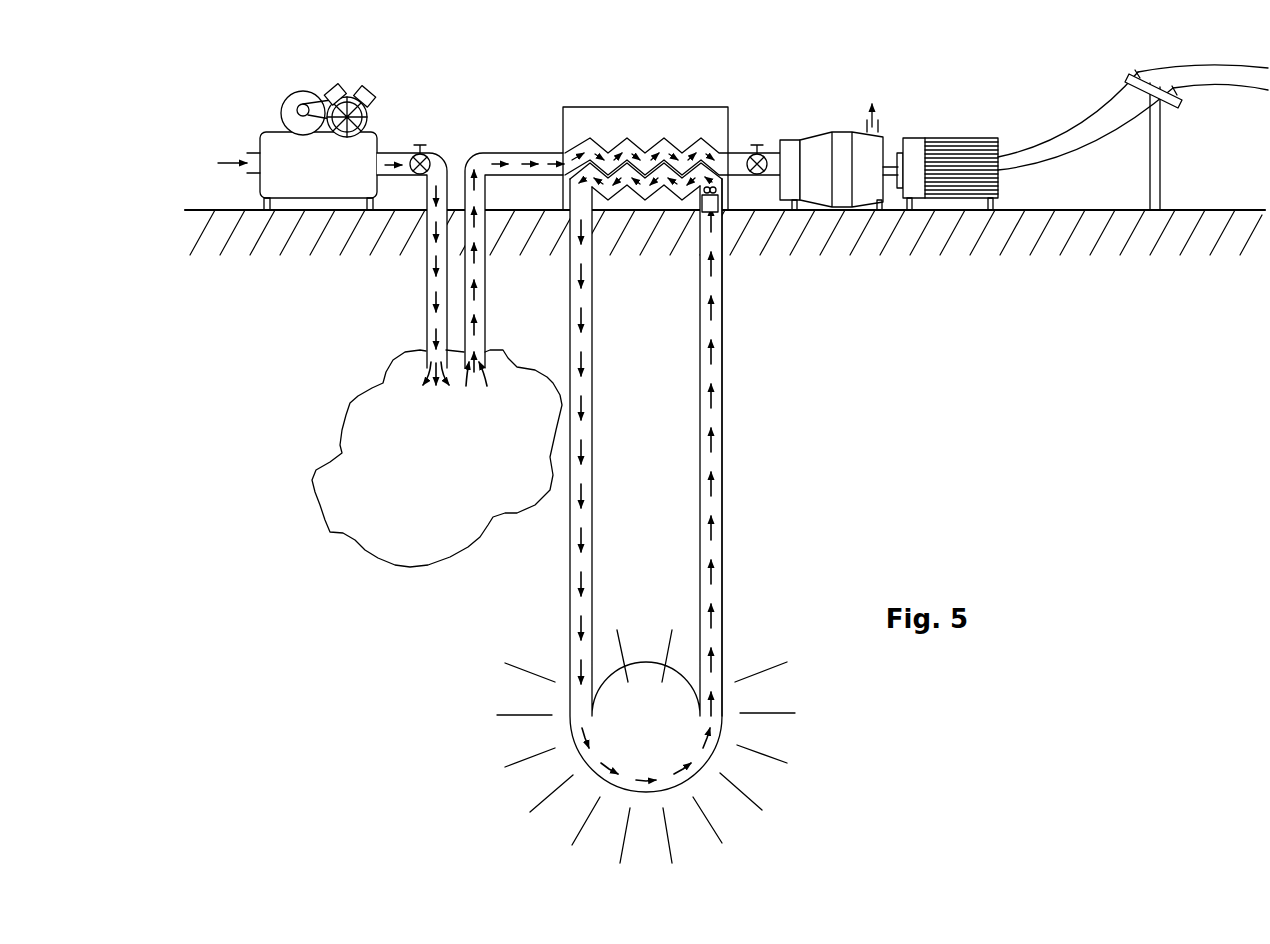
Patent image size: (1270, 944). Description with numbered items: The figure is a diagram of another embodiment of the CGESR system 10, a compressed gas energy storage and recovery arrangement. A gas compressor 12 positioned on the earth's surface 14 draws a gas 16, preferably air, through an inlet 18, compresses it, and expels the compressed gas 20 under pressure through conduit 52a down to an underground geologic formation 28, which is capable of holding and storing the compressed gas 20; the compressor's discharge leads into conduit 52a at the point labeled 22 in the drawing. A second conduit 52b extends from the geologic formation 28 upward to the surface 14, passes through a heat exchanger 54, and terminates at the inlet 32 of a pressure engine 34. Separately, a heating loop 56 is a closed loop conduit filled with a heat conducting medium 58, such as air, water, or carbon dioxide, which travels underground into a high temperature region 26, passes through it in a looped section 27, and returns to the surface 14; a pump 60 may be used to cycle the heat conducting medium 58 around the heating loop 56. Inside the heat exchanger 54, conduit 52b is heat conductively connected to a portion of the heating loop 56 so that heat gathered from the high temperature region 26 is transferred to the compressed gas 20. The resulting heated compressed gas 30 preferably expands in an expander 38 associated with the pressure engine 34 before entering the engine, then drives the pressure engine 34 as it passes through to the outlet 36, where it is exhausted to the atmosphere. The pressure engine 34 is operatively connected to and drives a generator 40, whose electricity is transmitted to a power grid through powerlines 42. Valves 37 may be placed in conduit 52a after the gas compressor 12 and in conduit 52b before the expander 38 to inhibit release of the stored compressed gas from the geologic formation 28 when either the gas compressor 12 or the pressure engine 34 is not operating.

The CGESR system 10 is at (927, 93).
The gas compressor 12 is at (306, 176).
The earth's surface 14 is at (1067, 212).
The gas 16 is at (230, 165).
The inlet 18 is at (255, 153).
The compressed gas 20 is at (393, 170).
The outlet pipe 22 is at (380, 150).
The high temperature region 26 is at (634, 734).
The looped section 27 is at (697, 772).
The underground geologic formation 28 is at (350, 403).
The heated compressed gas 30 is at (712, 140).
The inlet 32 is at (777, 180).
The pressure engine 34 is at (832, 134).
The outlet 36 is at (870, 122).
The valves 37 is at (421, 145).
The expander 38 is at (790, 150).
The generator 40 is at (940, 138).
The powerlines 42 is at (1138, 133).
The conduit 52a is at (426, 302).
The conduit 52b is at (493, 150).
The heat exchanger 54 is at (627, 107).
The heating loop 56 is at (722, 355).
The heat conducting medium 58 is at (713, 422).
The pump 60 is at (713, 205).